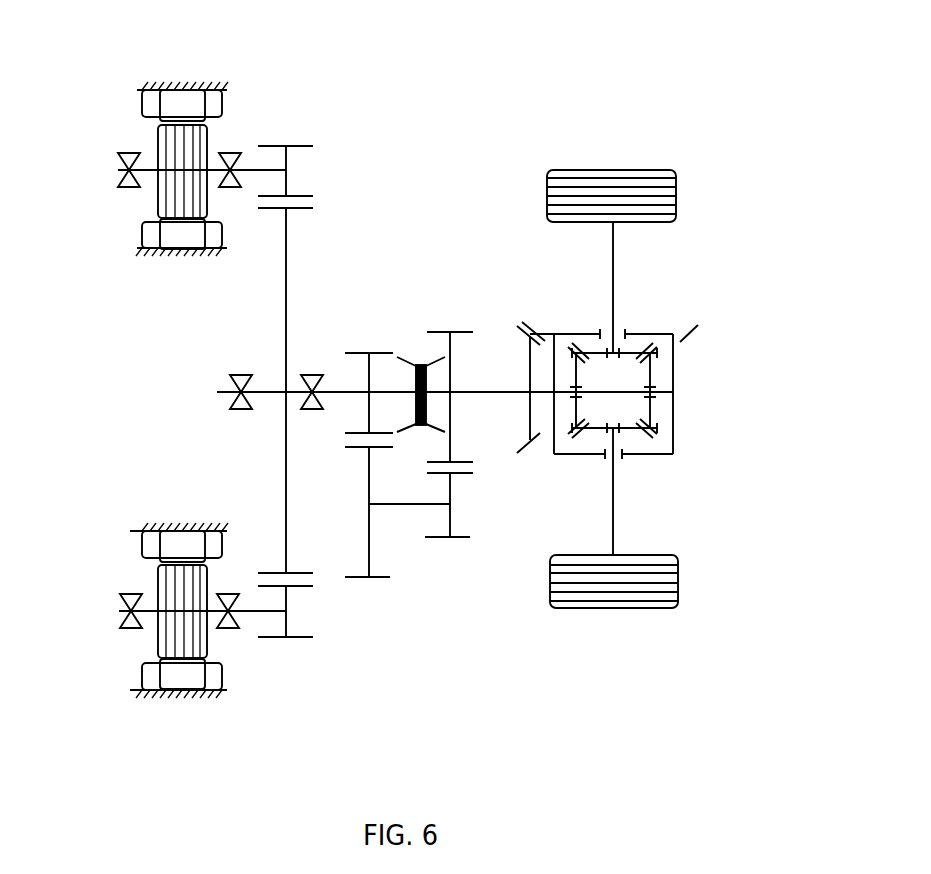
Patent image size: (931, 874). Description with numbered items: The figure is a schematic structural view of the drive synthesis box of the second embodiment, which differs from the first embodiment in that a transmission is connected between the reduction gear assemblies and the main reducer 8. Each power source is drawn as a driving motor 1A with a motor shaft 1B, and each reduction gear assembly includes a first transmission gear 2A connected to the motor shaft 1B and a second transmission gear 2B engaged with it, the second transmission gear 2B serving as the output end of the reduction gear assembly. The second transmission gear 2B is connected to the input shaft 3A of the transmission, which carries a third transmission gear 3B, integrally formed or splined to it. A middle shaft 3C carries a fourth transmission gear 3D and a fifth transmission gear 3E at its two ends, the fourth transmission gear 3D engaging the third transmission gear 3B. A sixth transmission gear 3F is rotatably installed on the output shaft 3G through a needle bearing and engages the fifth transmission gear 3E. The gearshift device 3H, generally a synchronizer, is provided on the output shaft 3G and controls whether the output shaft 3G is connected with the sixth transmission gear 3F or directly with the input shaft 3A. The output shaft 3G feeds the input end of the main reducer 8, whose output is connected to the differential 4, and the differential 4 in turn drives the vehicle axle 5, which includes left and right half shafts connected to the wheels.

The driving motor 1A is at (143, 100).
The motor shaft 1B is at (236, 166).
The first transmission gear 2A is at (290, 153).
The second transmission gear 2B is at (289, 288).
The input shaft 3A is at (333, 400).
The third transmission gear 3B is at (347, 358).
The middle shaft 3C is at (415, 505).
The fourth transmission gear 3D is at (368, 550).
The fifth transmission gear 3E is at (452, 517).
The sixth transmission gear 3F is at (474, 336).
The output shaft 3G is at (503, 390).
The gearshift device 3H is at (415, 362).
The differential 4 is at (673, 438).
The vehicle axle 5 is at (613, 270).
The main reducer 8 is at (527, 418).